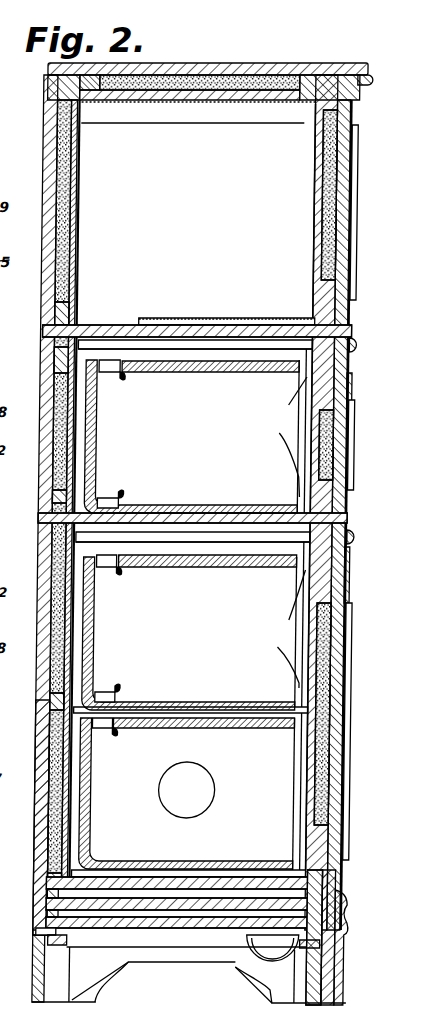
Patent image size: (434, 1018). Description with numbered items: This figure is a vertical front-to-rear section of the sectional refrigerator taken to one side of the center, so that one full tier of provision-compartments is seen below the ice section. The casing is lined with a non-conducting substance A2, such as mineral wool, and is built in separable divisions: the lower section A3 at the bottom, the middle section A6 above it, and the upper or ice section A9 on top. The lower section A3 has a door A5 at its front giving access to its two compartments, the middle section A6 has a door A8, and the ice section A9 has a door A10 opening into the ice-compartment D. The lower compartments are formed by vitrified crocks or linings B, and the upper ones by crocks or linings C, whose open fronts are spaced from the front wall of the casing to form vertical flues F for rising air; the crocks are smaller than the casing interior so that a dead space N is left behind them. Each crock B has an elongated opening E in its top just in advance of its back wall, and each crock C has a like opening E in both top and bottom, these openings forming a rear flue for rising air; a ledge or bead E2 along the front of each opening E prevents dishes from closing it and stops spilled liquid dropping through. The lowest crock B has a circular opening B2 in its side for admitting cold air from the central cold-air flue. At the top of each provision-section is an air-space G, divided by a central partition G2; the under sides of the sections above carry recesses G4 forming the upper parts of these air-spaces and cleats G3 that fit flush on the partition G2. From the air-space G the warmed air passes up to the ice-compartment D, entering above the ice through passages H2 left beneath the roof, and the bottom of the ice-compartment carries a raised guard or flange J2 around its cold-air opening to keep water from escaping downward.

The non-conducting substance A2 is at (48, 155).
The upper or ice division or section A9 is at (46, 283).
The lower section or division A3 is at (44, 738).
The passages H2 is at (159, 117).
The ice-compartment D is at (253, 229).
The door A10 is at (357, 220).
The middle section A6 is at (353, 365).
The doors A8 is at (355, 437).
The door A5 is at (356, 617).
The raised guard or flange J2 is at (160, 317).
The cleats G3 is at (280, 326).
The recesses G4 is at (248, 321).
The air-space G is at (140, 348).
The central partition G2 is at (264, 350).
The crocks or linings C is at (194, 529).
The crocks or linings B is at (190, 791).
The circular openings B2 is at (173, 813).
The opening E is at (116, 375).
The ledge or bead E2 is at (134, 378).
The vertical flues or passageways F is at (288, 762).
The dead space N is at (85, 450).